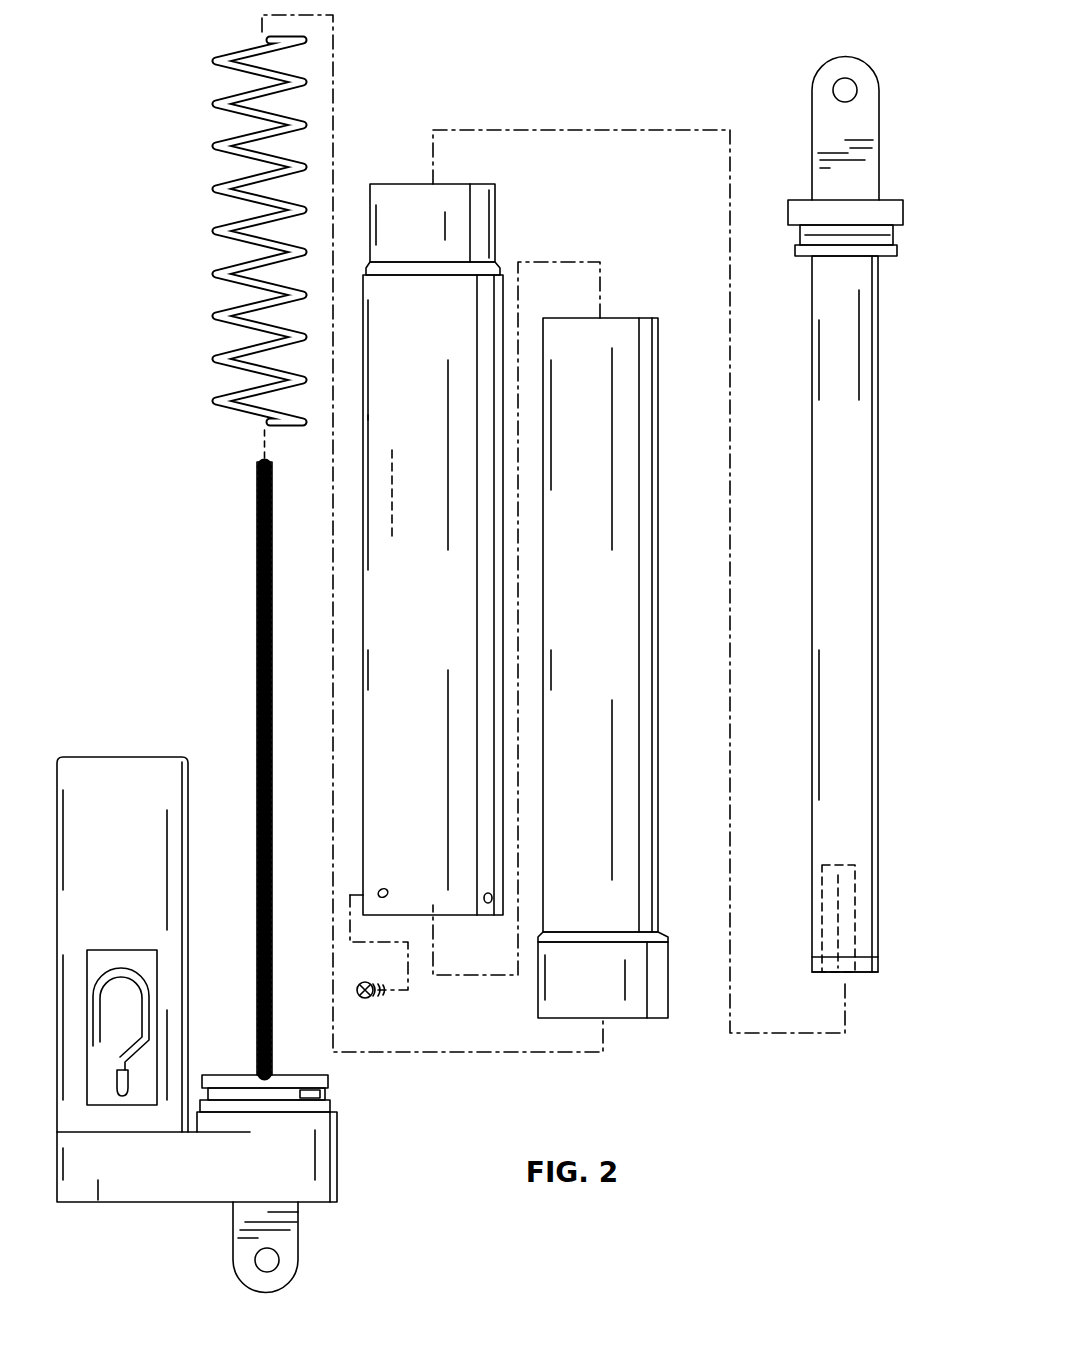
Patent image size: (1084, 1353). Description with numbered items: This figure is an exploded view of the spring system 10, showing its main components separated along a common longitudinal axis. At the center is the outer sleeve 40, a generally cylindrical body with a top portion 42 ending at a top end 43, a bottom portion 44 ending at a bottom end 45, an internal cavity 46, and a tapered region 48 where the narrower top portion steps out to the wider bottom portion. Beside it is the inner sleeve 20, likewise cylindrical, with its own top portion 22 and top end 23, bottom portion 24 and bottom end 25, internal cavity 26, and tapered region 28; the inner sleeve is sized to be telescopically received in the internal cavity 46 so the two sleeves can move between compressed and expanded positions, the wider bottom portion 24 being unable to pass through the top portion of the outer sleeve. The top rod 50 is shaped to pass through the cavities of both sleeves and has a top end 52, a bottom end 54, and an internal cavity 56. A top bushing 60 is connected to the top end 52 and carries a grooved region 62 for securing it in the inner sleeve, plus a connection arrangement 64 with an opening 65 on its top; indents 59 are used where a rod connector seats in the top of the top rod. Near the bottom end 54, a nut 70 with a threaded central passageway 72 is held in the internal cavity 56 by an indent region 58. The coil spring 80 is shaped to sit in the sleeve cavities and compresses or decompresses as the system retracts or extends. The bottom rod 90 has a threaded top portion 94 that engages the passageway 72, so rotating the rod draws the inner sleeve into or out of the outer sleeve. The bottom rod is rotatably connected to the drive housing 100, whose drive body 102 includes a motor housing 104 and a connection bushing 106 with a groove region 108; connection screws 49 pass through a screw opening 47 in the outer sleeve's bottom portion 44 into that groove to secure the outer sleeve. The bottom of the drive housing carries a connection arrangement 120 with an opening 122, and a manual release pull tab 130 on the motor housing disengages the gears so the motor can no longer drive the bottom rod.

The spring system 10 is at (136, 124).
The inner sleeve 20 is at (629, 676).
The top portion of inner sleeve 22 is at (645, 370).
The top end of inner sleeve 23 is at (636, 318).
The bottom portion of inner sleeve 24 is at (655, 982).
The bottom end of inner sleeve 25 is at (638, 1020).
The internal cavity of inner sleeve 26 is at (625, 742).
The tapered region of inner sleeve 28 is at (640, 930).
The outer sleeve 40 is at (389, 595).
The top portion of outer sleeve 42 is at (483, 218).
The top end of outer sleeve 43 is at (398, 183).
The bottom portion of outer sleeve 44 is at (380, 893).
The bottom end of outer sleeve 45 is at (445, 917).
The internal cavity of outer sleeve 46 is at (400, 466).
The screw opening 47 is at (388, 890).
The tapered region of outer sleeve 48 is at (485, 265).
The connection screw 49 is at (372, 1000).
The top rod 50 is at (839, 545).
The top end of top rod 52 is at (826, 258).
The bottom end of top rod 54 is at (860, 972).
The internal cavity of top rod 56 is at (826, 685).
The indent region 58 is at (875, 957).
The indents 59 is at (810, 256).
The top bushing 60 is at (790, 204).
The grooved region 62 is at (850, 245).
The connection arrangement 64 is at (855, 130).
The opening 65 is at (832, 90).
The nut 70 is at (862, 895).
The threaded central passageway 72 is at (840, 870).
The coil spring 80 is at (258, 242).
The bottom rod 90 is at (248, 605).
The top portion of bottom rod 94 is at (254, 470).
The drive housing 100 is at (244, 984).
The drive body 102 is at (99, 1182).
The motor housing 104 is at (180, 864).
The connection bushing 106 is at (322, 1081).
The groove region 108 is at (327, 1098).
The connection arrangement 120 is at (290, 1236).
The opening 122 is at (272, 1259).
The manual release pull tab 130 is at (150, 982).